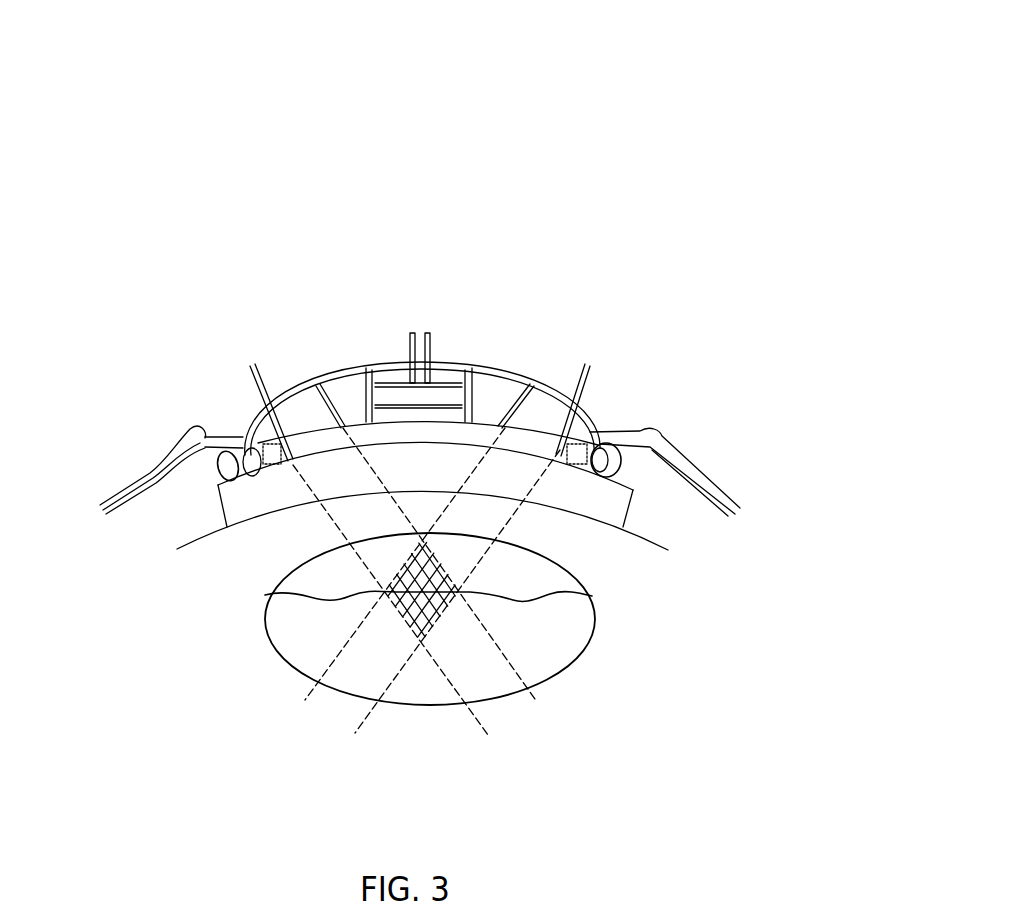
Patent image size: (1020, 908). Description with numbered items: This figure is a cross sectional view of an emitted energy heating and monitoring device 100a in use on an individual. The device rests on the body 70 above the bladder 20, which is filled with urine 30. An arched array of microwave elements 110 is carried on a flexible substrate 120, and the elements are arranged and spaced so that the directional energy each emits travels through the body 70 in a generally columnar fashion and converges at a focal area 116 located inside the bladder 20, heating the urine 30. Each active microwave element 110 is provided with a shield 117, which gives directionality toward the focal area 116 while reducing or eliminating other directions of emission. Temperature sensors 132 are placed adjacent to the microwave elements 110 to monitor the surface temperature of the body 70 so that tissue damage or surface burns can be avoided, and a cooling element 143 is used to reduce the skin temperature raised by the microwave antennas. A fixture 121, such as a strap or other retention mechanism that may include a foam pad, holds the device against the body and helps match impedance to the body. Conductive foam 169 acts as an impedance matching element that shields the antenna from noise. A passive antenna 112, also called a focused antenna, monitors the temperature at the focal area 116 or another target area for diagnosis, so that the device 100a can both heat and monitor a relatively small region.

The emitted energy heating and monitoring device 100a is at (436, 160).
The passive antenna 112 is at (463, 364).
The flexible substrate 120 is at (384, 364).
The shield 117 is at (358, 366).
The microwave elements 110 is at (262, 400).
The temperature sensors 132 is at (236, 434).
The fixture 121 is at (205, 431).
The cooling element 143 is at (635, 463).
The conductive foam 169 is at (608, 497).
The body 70 is at (187, 550).
The urine 30 is at (283, 626).
The bladder 20 is at (585, 587).
The focal area 116 is at (433, 620).